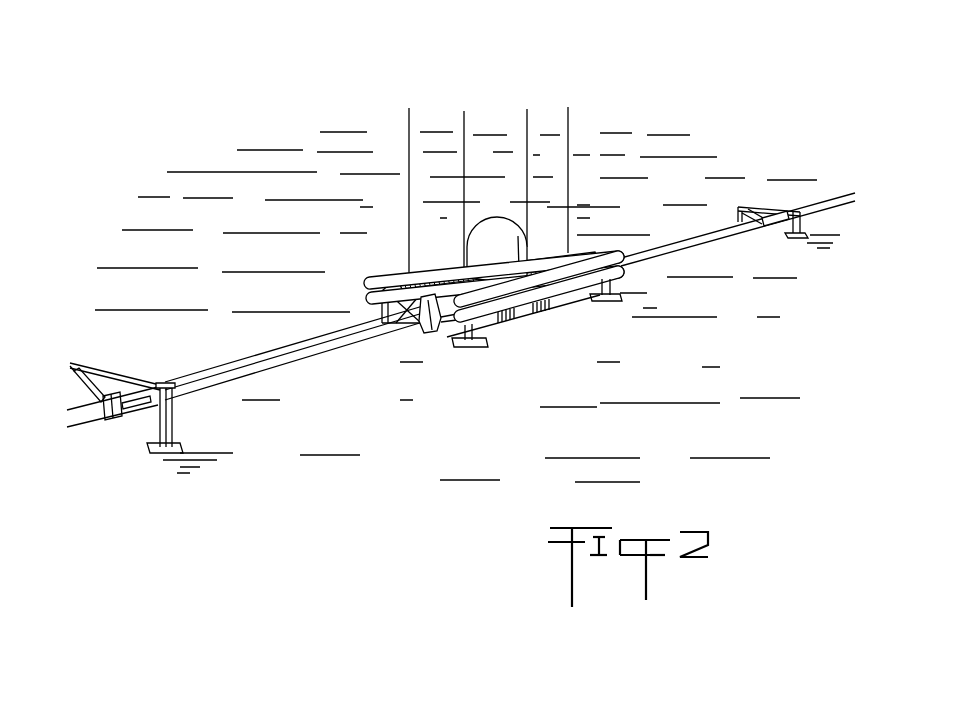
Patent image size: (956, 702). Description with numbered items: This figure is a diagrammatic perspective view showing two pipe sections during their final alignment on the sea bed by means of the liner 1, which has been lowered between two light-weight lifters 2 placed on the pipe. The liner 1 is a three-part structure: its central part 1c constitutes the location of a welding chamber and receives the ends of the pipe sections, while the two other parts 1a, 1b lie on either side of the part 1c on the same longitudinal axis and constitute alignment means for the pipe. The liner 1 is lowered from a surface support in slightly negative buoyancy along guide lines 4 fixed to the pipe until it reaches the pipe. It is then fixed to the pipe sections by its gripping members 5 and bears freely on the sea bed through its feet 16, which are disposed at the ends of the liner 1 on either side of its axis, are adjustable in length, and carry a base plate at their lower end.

The liner 1 is at (524, 292).
The alignment means part 1a is at (420, 276).
The alignment means part 1b is at (543, 246).
The welding chamber part 1c is at (529, 306).
The lifter 2 is at (152, 379).
The guide lines 4 is at (408, 152).
The gripping members 5 is at (435, 338).
The feet 16 is at (618, 283).